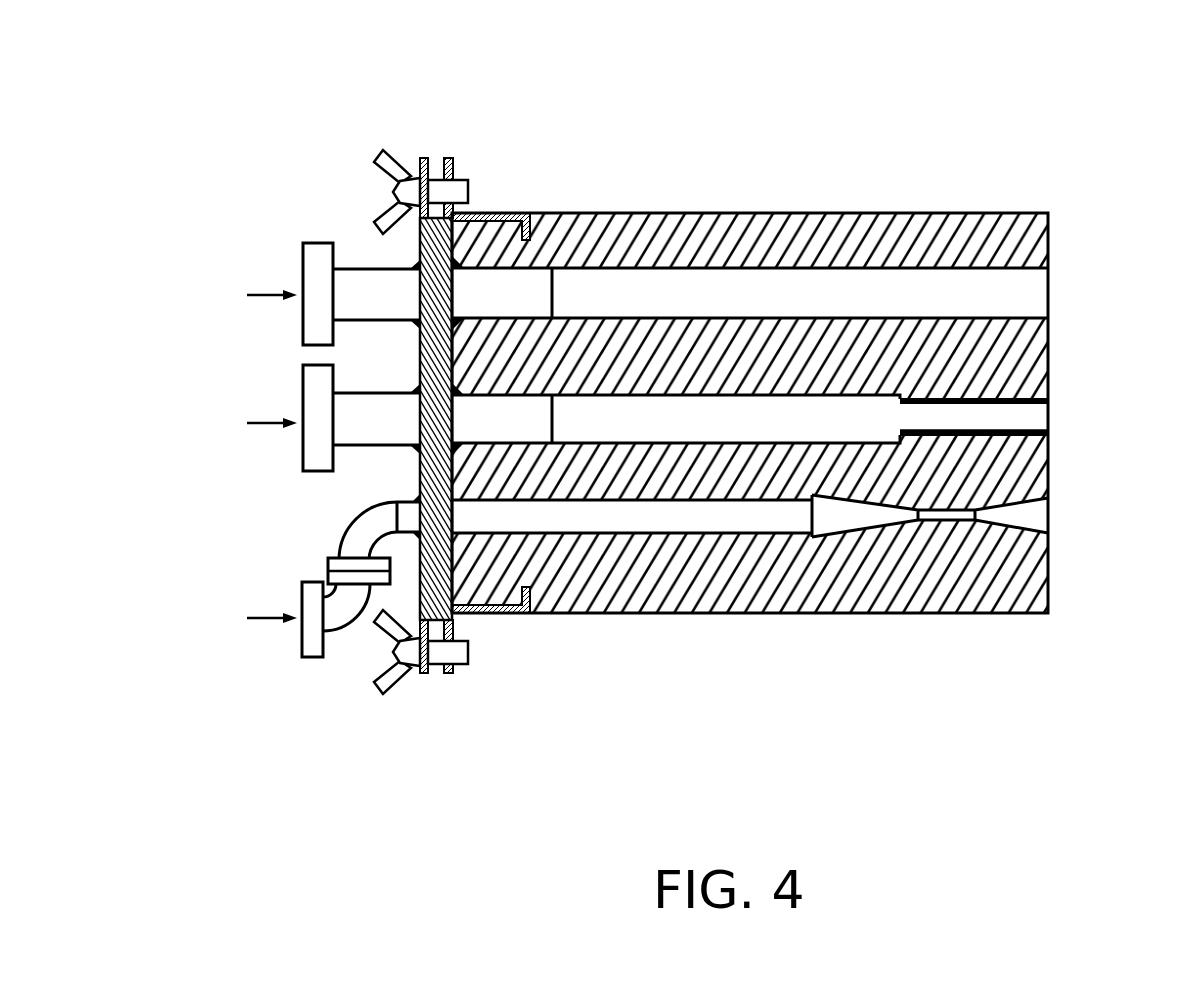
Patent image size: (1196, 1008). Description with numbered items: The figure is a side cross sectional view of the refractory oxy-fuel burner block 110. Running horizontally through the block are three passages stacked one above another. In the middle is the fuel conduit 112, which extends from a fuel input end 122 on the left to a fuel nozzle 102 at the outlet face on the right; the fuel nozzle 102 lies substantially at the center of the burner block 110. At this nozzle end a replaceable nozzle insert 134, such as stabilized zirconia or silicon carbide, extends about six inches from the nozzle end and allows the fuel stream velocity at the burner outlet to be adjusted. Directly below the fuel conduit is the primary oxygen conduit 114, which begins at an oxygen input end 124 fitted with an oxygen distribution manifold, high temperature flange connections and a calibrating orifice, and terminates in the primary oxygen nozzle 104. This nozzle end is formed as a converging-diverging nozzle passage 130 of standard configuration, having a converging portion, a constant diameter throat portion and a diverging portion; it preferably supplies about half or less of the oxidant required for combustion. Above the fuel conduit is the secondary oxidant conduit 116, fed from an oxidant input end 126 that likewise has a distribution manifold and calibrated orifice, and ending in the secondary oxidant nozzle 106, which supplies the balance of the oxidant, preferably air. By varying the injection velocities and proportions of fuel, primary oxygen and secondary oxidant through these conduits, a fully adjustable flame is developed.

The refractory burner block 110 is at (811, 382).
The fuel nozzle 102 is at (1048, 413).
The primary oxygen nozzle 104 is at (1048, 512).
The secondary oxidant nozzle 106 is at (1048, 297).
The fuel conduit 112 is at (695, 410).
The primary oxygen conduit 114 is at (763, 513).
The secondary oxidant conduit 116 is at (705, 290).
The fuel input end 122 is at (315, 465).
The oxygen input end 124 is at (312, 652).
The oxidant input end 126 is at (300, 262).
The converging-diverging nozzle passage 130 is at (946, 517).
The nozzle insert 134 is at (1048, 420).